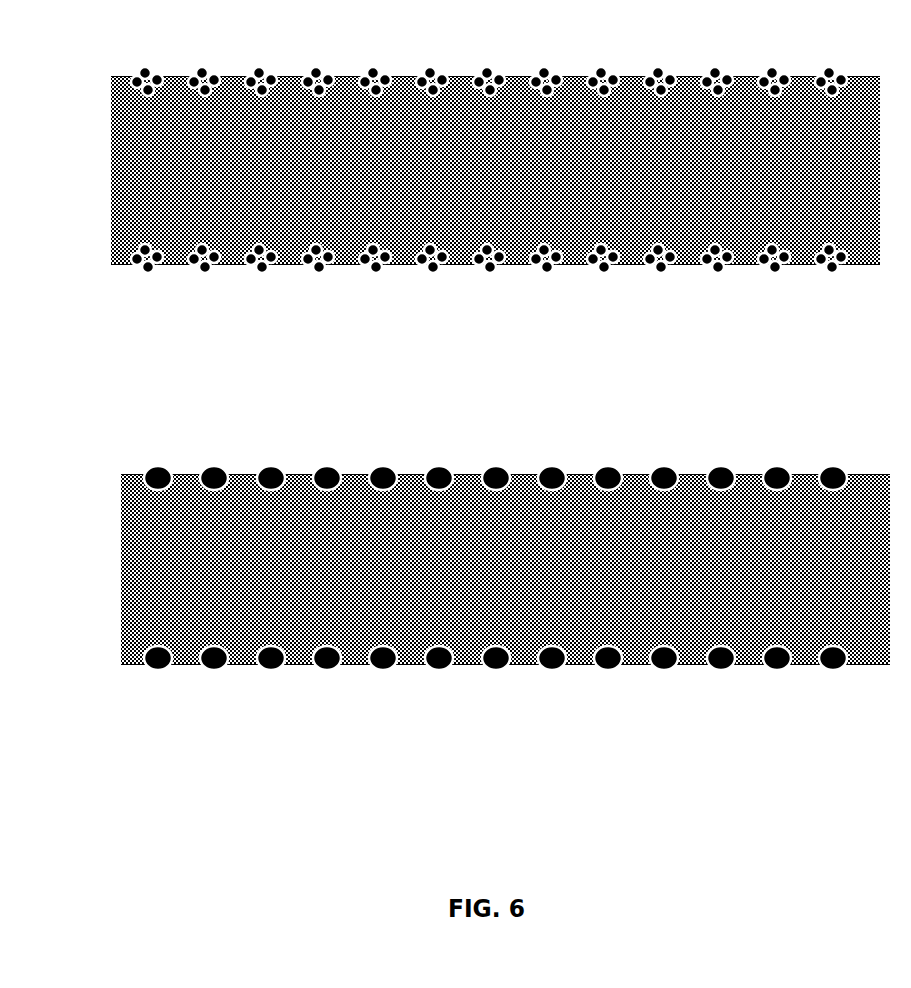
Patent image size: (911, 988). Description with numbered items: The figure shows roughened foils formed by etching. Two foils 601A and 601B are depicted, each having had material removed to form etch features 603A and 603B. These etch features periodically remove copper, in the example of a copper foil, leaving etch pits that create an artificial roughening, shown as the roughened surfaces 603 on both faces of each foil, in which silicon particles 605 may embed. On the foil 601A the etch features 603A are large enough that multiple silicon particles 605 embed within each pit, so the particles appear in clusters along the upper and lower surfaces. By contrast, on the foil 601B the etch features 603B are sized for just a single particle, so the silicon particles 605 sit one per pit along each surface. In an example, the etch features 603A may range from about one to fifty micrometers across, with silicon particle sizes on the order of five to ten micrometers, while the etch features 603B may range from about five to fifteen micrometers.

The foil 601A is at (557, 182).
The foil 601B is at (568, 578).
The roughened surfaces 603 is at (505, 352).
The etch features 603A is at (647, 98).
The etch features 603B is at (732, 642).
The silicon particles 605 is at (430, 72).